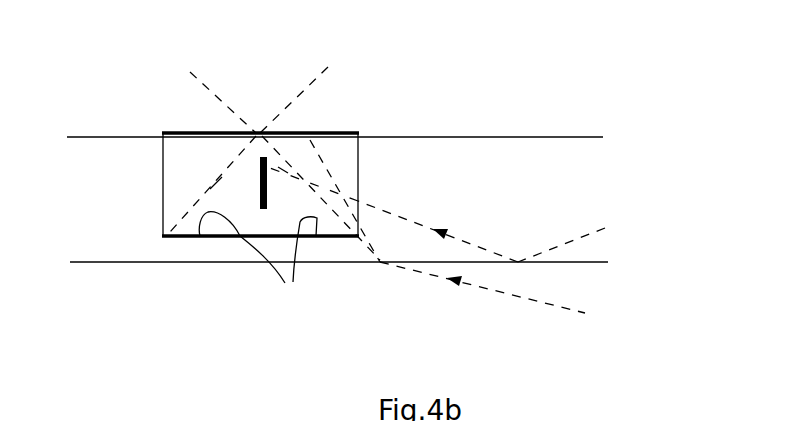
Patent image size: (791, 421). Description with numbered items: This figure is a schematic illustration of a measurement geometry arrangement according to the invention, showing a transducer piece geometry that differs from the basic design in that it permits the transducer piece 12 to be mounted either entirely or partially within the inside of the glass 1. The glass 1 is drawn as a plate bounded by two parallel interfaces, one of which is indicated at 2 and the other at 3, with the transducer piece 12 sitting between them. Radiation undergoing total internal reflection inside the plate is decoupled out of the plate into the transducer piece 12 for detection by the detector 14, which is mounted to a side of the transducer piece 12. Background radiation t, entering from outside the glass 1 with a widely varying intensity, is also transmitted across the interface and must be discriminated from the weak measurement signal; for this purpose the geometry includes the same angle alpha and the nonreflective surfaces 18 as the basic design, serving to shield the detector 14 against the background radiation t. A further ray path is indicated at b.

The glass 1 is at (108, 215).
The light-guiding layer 2 is at (447, 136).
The incident light beam 3 is at (567, 264).
The transducer piece 12 is at (333, 102).
The detector 14 is at (260, 200).
The nonreflective surfaces 18 is at (186, 131).
The light beam b is at (570, 242).
The background radiation t is at (433, 275).